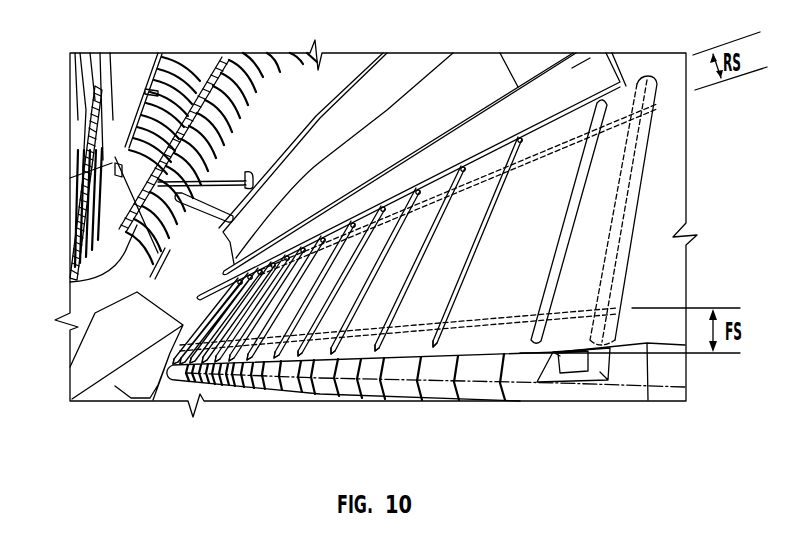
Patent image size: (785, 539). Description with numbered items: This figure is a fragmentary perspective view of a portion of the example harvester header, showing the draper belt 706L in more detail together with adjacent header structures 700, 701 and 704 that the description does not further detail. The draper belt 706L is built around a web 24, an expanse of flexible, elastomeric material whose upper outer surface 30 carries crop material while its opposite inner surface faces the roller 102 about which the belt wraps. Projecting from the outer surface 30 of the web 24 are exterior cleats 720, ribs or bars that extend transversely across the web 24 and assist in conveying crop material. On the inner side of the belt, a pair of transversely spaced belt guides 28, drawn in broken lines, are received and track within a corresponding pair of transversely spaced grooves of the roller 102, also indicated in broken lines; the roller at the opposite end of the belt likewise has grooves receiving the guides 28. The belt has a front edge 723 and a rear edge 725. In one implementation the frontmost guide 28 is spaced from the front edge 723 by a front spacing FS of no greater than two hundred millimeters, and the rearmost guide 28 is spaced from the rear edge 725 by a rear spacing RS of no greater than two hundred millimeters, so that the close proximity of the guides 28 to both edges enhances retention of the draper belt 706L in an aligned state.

The rake 704 is at (156, 63).
The rear edge 725 is at (590, 108).
The roller 102 is at (657, 78).
The belt guide 28 is at (620, 125).
The exterior cleats 720 is at (593, 168).
The upper outer surface 30 is at (518, 247).
The conveyor assembly 701 is at (44, 171).
The header assembly 700 is at (63, 233).
The front edge 723 is at (358, 357).
The draper belt 706L is at (408, 356).
The web 24 is at (492, 347).